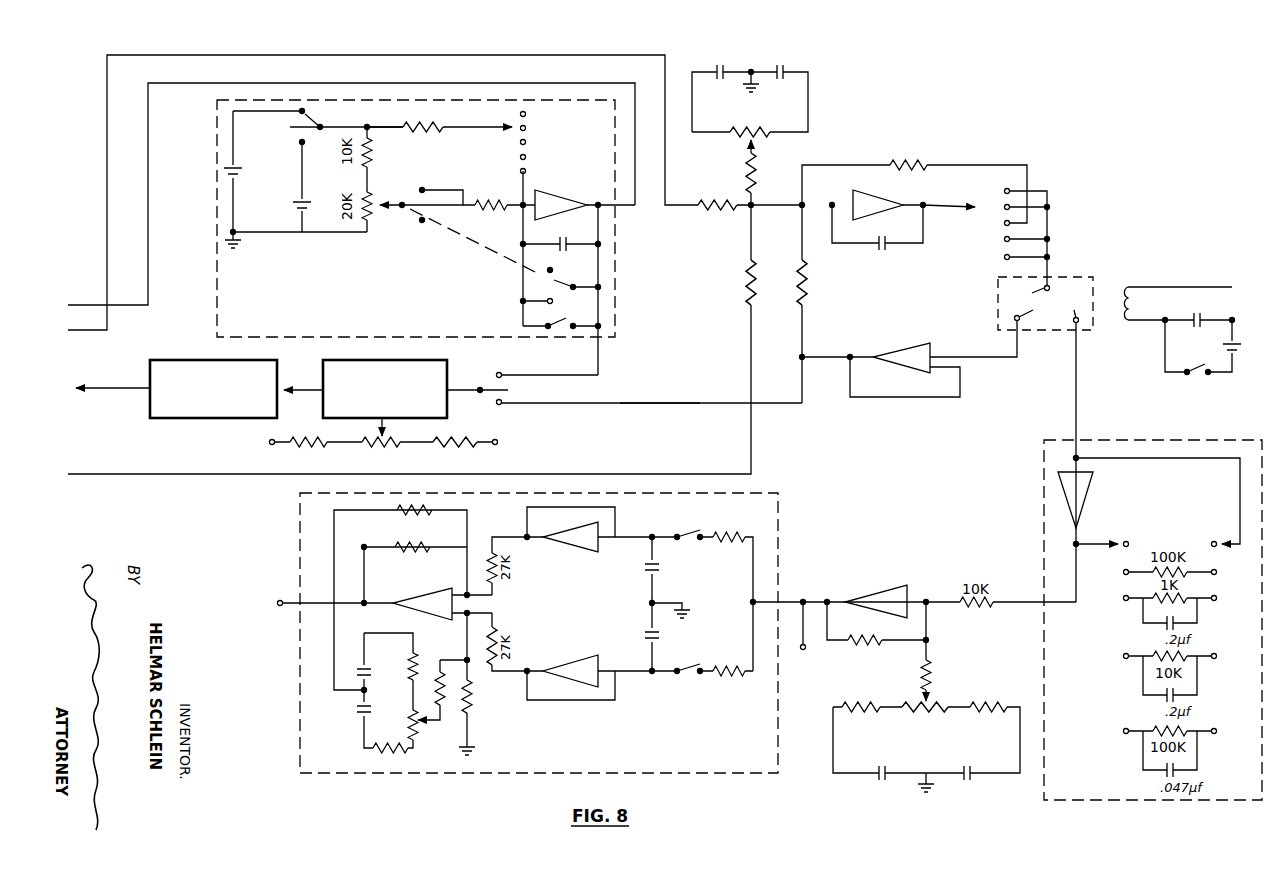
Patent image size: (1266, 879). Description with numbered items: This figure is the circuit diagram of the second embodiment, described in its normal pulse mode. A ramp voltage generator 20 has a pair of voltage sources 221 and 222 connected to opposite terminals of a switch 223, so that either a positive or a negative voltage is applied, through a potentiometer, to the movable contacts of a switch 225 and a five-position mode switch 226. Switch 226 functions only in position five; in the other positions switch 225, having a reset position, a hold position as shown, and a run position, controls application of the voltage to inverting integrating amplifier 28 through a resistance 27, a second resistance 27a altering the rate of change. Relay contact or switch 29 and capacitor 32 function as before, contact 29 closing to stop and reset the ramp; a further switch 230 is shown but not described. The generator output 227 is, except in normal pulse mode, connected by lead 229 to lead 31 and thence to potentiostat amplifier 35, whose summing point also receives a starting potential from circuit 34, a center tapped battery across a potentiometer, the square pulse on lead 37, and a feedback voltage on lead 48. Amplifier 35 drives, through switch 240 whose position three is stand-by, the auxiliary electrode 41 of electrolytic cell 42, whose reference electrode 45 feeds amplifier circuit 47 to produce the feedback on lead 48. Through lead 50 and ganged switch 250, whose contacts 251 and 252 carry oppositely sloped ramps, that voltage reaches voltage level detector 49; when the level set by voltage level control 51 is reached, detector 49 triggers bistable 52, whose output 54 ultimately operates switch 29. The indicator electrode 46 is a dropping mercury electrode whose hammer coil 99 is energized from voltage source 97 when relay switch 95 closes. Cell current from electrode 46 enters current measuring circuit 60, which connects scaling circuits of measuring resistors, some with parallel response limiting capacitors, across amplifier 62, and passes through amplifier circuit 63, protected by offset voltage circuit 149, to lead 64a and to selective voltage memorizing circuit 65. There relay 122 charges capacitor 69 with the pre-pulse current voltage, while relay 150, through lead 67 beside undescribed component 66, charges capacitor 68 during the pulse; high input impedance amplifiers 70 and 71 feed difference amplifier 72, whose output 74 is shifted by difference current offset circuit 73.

The ramp voltage generator 20 is at (210, 153).
The voltage source 221 is at (236, 172).
The voltage source 222 is at (304, 202).
The switch 223 is at (305, 122).
The switch 225 is at (410, 201).
The five-position switch 226 is at (509, 120).
The resistance 27a is at (439, 124).
The resistance 27 is at (502, 208).
The amplifier 28 is at (542, 190).
The capacitor 32 is at (561, 242).
The switch 230 is at (566, 286).
The relay contact 29 is at (552, 321).
The output 227 is at (98, 305).
The lead 229 is at (98, 338).
The lead 31 is at (686, 210).
The circuit 34 is at (818, 96).
The potentiostat amplifier 35 is at (877, 202).
The switch 240 is at (978, 218).
The electrolytic cell 42 is at (992, 304).
The auxiliary electrode 41 is at (1030, 290).
The reference electrode 45 is at (991, 329).
The indicator electrode 46 is at (1077, 440).
The amplifier circuit 47 is at (892, 344).
The lead 48 is at (804, 310).
The lead 37 is at (750, 336).
The voltage level detector 49 is at (404, 360).
The lead 50 is at (612, 404).
The voltage level control 51 is at (496, 457).
The bistable 52 is at (188, 360).
The output lead 54 is at (126, 388).
The switch 250 is at (490, 387).
The contact 251 is at (505, 379).
The contact 252 is at (505, 405).
The coil 99 is at (1134, 301).
The voltage source 97 is at (1232, 351).
The relay switch 95 is at (1207, 376).
The current measuring circuit 60 is at (1144, 432).
The amplifier 62 is at (1084, 484).
The amplifier circuit 63 is at (898, 588).
The lead 64a is at (807, 640).
The selective voltage memorizing circuit 65 is at (782, 500).
The resistor 1K 66 is at (753, 550).
The lead 67 is at (753, 666).
The capacitor 68 is at (646, 636).
The capacitor 69 is at (644, 568).
The high input impedance amplifier 70 is at (586, 664).
The high input impedance amplifier 71 is at (588, 544).
The difference amplifier 72 is at (456, 591).
The difference current offset circuit 73 is at (352, 698).
The output 74 is at (280, 608).
The relay 122 is at (682, 532).
The offset voltage circuit 149 is at (898, 782).
The relay 150 is at (690, 678).